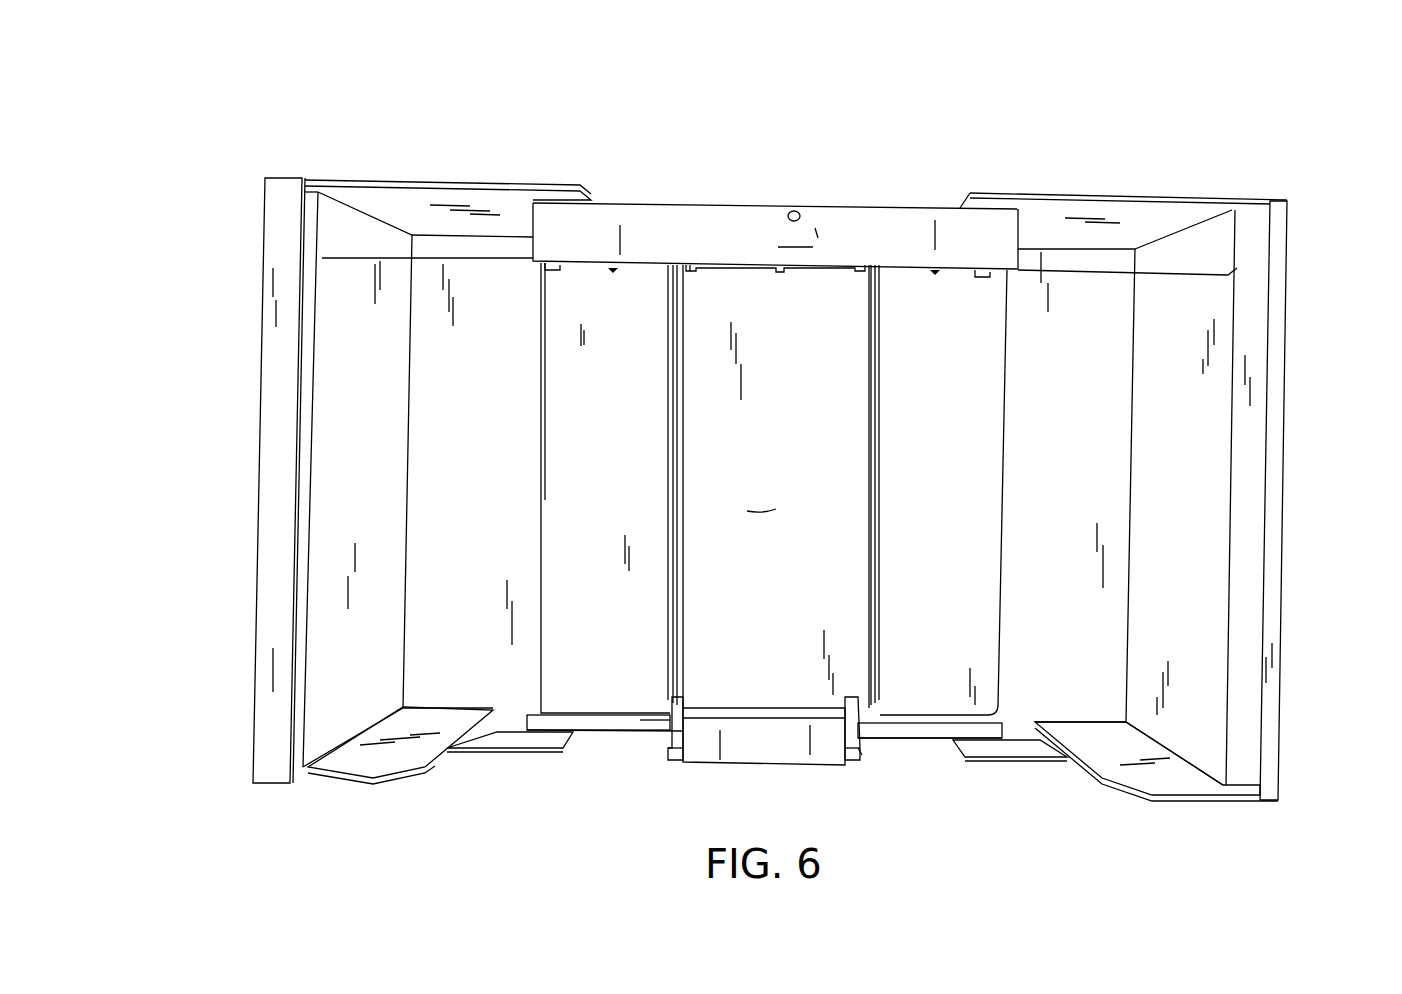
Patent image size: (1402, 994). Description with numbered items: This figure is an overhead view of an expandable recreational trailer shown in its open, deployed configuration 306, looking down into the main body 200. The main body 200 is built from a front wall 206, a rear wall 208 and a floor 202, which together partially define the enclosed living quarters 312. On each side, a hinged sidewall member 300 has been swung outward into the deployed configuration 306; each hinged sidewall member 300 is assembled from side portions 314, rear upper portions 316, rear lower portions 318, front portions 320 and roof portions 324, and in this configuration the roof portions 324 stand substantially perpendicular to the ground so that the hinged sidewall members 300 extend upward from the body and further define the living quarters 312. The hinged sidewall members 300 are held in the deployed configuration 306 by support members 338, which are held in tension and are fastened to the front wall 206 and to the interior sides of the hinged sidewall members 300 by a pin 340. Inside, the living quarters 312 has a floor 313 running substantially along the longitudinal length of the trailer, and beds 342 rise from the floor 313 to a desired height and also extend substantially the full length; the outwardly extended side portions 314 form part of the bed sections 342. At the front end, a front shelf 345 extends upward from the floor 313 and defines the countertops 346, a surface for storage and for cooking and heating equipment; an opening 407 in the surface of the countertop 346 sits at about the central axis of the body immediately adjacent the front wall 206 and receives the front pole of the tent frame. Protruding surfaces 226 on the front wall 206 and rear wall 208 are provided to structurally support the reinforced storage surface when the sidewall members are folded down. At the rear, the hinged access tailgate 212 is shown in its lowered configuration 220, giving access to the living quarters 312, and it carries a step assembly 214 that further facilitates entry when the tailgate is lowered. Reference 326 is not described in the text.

The main body 200 is at (787, 142).
The floor 202 is at (831, 331).
The front wall 206 is at (684, 268).
The rear wall 208 is at (630, 735).
The hinged access tailgate 212 is at (800, 748).
The step assembly 214 is at (705, 750).
The lowered configuration 220 is at (852, 770).
The protruding surfaces 226 is at (617, 225).
The hinged sidewall members 300 is at (310, 165).
The deployed configuration 306 is at (1052, 78).
The enclosed living quarters 312 is at (778, 352).
The floor 313 is at (762, 498).
The side portions 314 is at (494, 670).
The rear upper portions 316 is at (353, 762).
The rear lower portions 318 is at (478, 740).
The front portions 320 is at (428, 210).
The roof portions 324 is at (335, 486).
The frame post 326 is at (272, 598).
The support members 338 is at (357, 250).
The pin 340 is at (325, 261).
The beds 342 is at (637, 295).
The front shelf 345 is at (796, 236).
The countertops 346 is at (815, 232).
The opening 407 is at (796, 210).